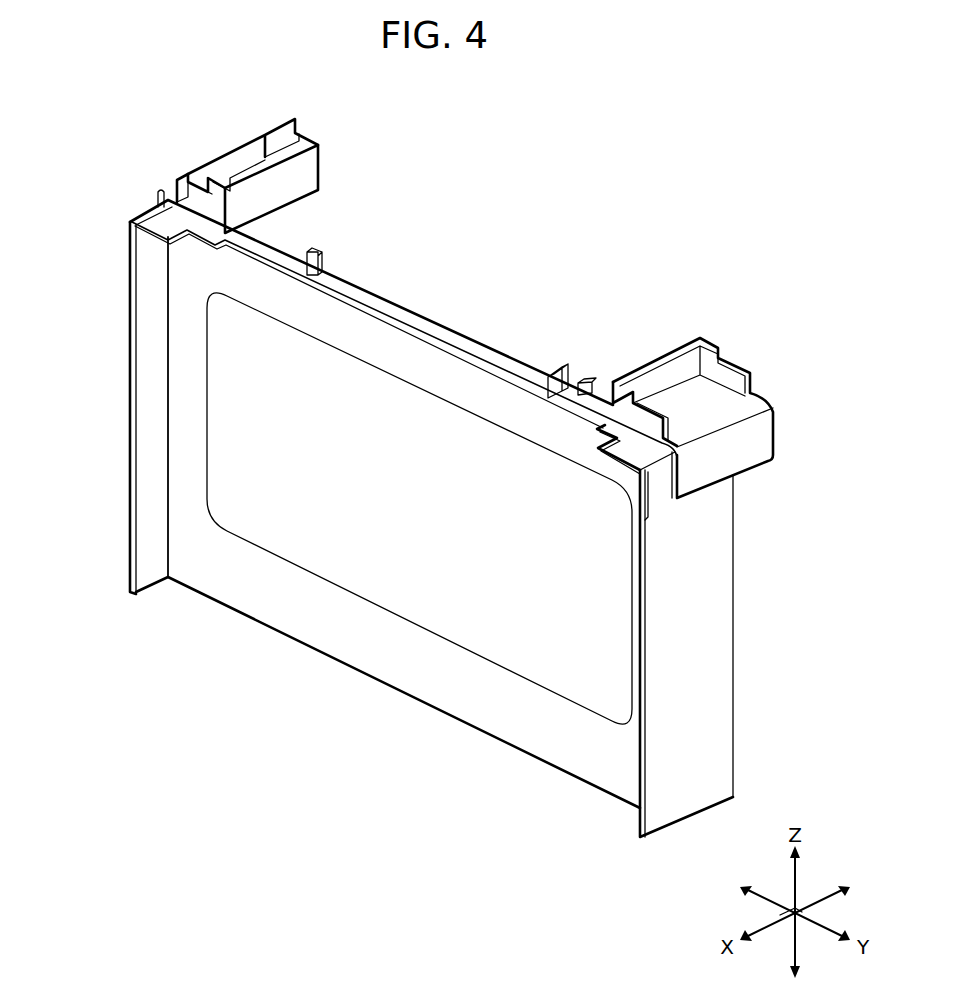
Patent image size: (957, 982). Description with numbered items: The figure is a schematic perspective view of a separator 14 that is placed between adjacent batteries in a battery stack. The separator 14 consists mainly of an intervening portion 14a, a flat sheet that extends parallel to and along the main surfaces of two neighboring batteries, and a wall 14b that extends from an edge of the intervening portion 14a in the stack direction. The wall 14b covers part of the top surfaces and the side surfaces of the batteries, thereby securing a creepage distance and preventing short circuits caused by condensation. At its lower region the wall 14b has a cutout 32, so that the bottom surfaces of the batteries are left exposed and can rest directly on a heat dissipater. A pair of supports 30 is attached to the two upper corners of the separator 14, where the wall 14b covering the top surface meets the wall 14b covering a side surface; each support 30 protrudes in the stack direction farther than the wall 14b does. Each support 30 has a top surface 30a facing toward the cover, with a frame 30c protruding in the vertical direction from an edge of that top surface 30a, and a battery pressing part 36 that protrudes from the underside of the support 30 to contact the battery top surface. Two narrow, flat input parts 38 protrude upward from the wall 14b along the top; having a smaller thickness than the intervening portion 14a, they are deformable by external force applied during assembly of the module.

The separator 14 is at (432, 525).
The intervening portion 14a is at (530, 738).
The wall 14b is at (130, 372).
The support 30 is at (491, 288).
The top surface 30a is at (248, 165).
The frame 30c is at (307, 133).
The cutout 32 is at (150, 588).
The battery pressing part 36 is at (293, 205).
The input part 38 is at (323, 243).